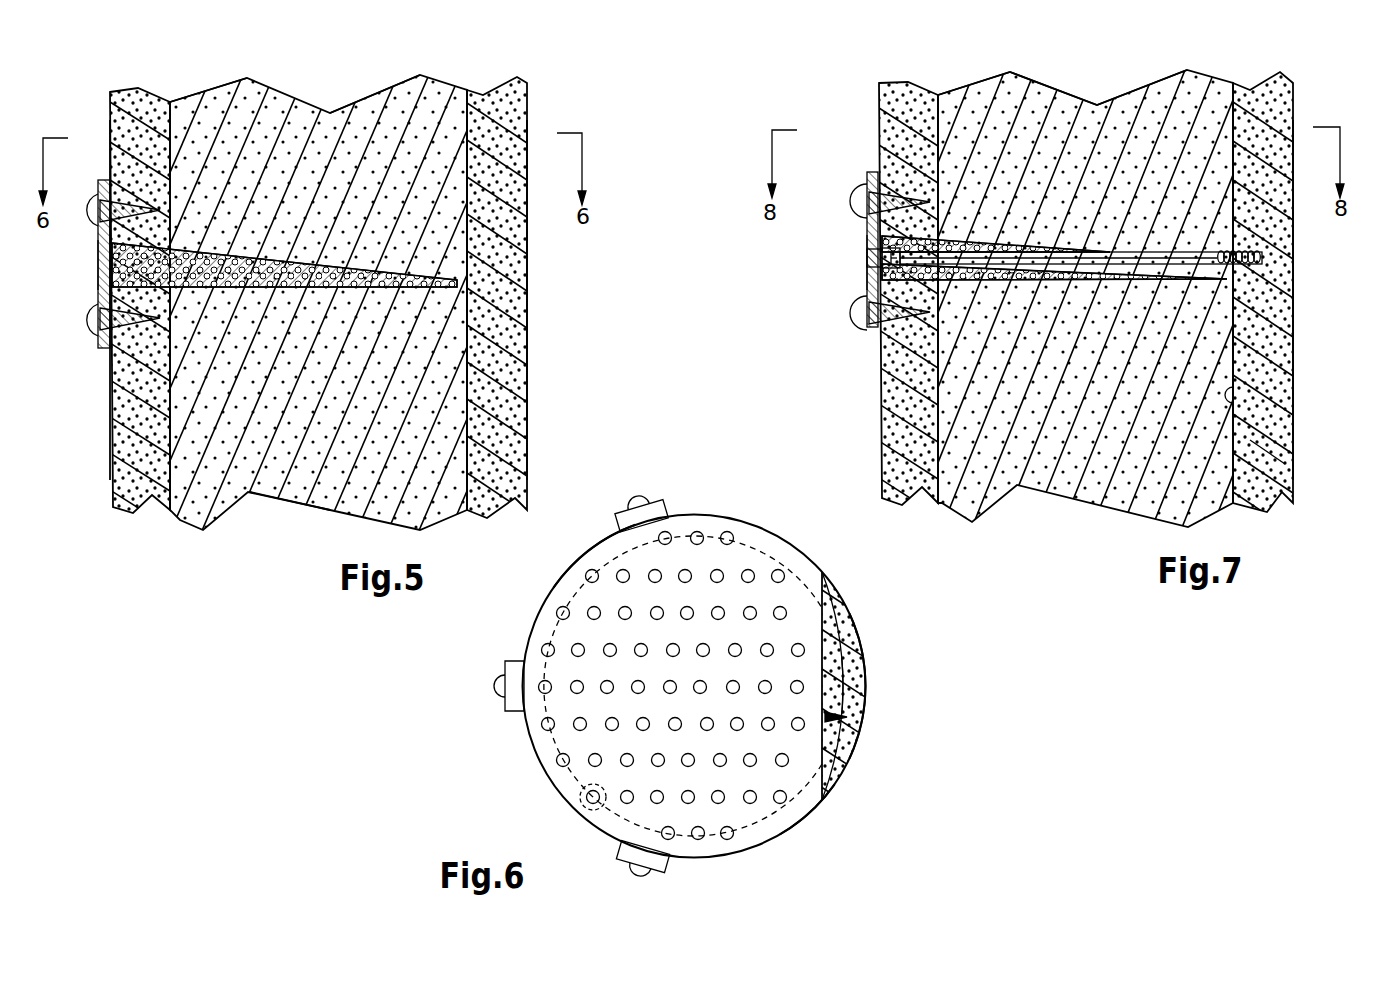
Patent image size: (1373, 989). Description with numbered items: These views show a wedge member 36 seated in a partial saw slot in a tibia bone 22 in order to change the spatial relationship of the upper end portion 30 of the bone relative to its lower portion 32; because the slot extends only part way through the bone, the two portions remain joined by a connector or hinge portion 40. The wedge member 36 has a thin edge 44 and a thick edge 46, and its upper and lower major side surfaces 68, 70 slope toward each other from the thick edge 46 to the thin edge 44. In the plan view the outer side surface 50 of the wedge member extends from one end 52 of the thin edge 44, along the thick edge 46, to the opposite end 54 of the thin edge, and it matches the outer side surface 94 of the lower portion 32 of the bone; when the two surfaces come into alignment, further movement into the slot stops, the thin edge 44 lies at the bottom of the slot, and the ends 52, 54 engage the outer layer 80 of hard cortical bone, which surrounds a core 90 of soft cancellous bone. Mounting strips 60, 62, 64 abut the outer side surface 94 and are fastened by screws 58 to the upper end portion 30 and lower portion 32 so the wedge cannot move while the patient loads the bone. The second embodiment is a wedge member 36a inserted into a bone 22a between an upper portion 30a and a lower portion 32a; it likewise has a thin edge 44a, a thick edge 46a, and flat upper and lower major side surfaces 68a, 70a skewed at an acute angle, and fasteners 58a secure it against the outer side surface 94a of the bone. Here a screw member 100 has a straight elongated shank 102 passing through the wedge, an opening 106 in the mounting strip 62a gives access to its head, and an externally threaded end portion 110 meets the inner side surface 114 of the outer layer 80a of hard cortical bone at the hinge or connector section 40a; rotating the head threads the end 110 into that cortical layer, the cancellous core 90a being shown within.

In FIG. 5, the tibia bone 22 is at (532, 106).
In FIG. 6, the tibia bone 22 is at (870, 626).
In FIG. 7, the bone 22a is at (1300, 115).
In FIG. 5, the upper end portion 30 is at (212, 125).
In FIG. 7, the upper portion 30a is at (972, 107).
In FIG. 5, the lower portion 32 is at (128, 438).
In FIG. 6, the lower portion 32 is at (851, 751).
In FIG. 7, the lower portion 32a is at (910, 416).
In FIG. 5, the wedge member 36 is at (273, 245).
In FIG. 6, the wedge member 36 is at (594, 526).
In FIG. 7, the wedge member 36a is at (1019, 236).
In FIG. 5, the connector or hinge portion 40 is at (477, 292).
In FIG. 6, the connector or hinge portion 40 is at (846, 690).
In FIG. 7, the hinge or connector section 40a is at (1232, 126).
In FIG. 5, the thin edge 44 is at (457, 282).
In FIG. 6, the thin edge 44 is at (848, 718).
In FIG. 7, the thin edge 44a is at (1223, 278).
In FIG. 5, the thick edge 46 is at (100, 276).
In FIG. 6, the thick edge 46 is at (553, 588).
In FIG. 7, the thick edge 46a is at (882, 243).
In FIG. 6, the outer side surface 50 is at (760, 521).
In FIG. 6, the end of the thin edge 52 is at (823, 572).
In FIG. 6, the opposite end of the thin edge 54 is at (836, 801).
In FIG. 5, the screws 58 is at (93, 211).
In FIG. 6, the screws 58 is at (641, 500).
In FIG. 7, the fasteners 58a is at (858, 203).
In FIG. 6, the mounting strip 60 is at (660, 510).
In FIG. 5, the mounting strip 62 is at (100, 253).
In FIG. 6, the mounting strip 62 is at (514, 713).
In FIG. 7, the mounting strip 62a is at (875, 278).
In FIG. 6, the mounting strip 64 is at (668, 866).
In FIG. 5, the upper major side surface 68 is at (362, 266).
In FIG. 7, the upper major side surface 68a is at (990, 185).
In FIG. 5, the lower major side surface 70 is at (320, 292).
In FIG. 7, the lower major side surface 70a is at (1042, 290).
In FIG. 5, the outer layer of hard cortical bone 80 is at (141, 482).
In FIG. 6, the outer layer of hard cortical bone 80 is at (586, 800).
In FIG. 7, the outer layer of hard cortical bone 80a is at (1270, 457).
In FIG. 5, the core of soft cancellous bone 90 is at (281, 468).
In FIG. 6, the core of soft cancellous bone 90 is at (836, 670).
In FIG. 7, the inner layer (second embodiment) 90a is at (1042, 115).
In FIG. 5, the outer side surface 94 is at (112, 484).
In FIG. 6, the outer side surface 94 is at (846, 791).
In FIG. 7, the outer side surface 94a is at (1295, 328).
In FIG. 7, the screw member 100 is at (1048, 200).
In FIG. 7, the shank 102 is at (1098, 251).
In FIG. 7, the opening 106 is at (875, 258).
In FIG. 7, the externally threaded end portion 110 is at (1262, 256).
In FIG. 7, the inner side surface 114 is at (1237, 407).